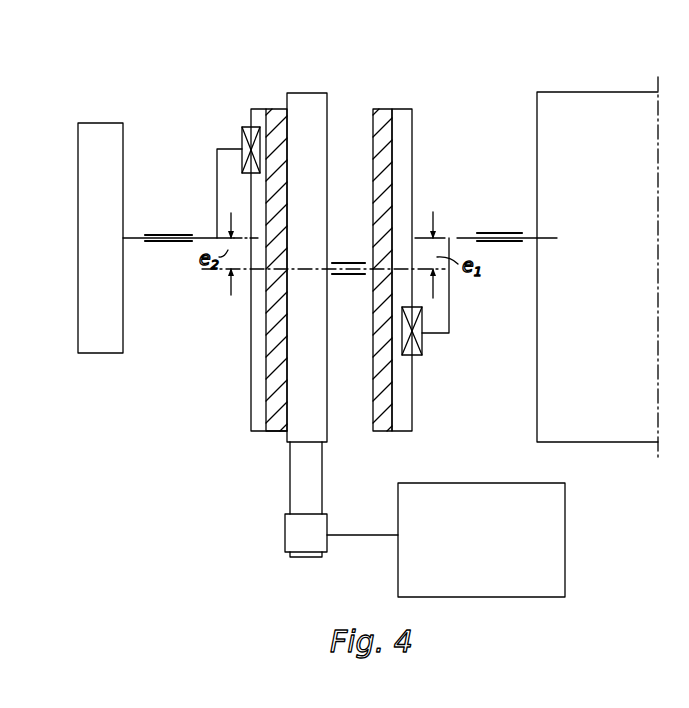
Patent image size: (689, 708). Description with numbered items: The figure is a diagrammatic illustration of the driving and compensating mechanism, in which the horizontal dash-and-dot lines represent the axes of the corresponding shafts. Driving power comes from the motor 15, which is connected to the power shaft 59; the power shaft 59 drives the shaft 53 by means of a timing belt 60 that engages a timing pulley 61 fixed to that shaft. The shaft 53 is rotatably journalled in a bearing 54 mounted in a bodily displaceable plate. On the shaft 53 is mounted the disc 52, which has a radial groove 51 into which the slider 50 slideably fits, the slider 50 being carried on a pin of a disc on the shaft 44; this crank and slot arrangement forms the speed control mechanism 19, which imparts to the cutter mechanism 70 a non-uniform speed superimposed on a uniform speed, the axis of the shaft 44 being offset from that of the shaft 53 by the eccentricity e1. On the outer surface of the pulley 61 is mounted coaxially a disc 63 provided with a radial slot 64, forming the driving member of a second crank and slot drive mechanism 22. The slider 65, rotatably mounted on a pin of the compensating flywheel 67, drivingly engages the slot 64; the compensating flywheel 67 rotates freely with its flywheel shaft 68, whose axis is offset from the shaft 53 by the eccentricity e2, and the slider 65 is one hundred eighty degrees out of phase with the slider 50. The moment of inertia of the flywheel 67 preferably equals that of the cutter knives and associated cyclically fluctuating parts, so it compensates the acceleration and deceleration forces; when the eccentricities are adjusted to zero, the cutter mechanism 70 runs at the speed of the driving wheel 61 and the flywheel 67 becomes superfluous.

The motor 15 is at (547, 548).
The speed control mechanism 19 is at (413, 92).
The second crank and slot drive mechanism 22 is at (227, 92).
The shaft 44 is at (462, 237).
The slider 50 is at (412, 352).
The radial groove 51 is at (398, 127).
The disc 52 is at (381, 115).
The shaft 53 is at (313, 268).
The bearing 54 is at (362, 276).
The power shaft 59 is at (300, 526).
The timing belt 60 is at (305, 476).
The timing pulley 61 is at (308, 110).
The disc 63 is at (275, 108).
The radial slot 64 is at (258, 109).
The slider 65 is at (245, 129).
The compensating flywheel 67 is at (98, 140).
The flywheel shaft 68 is at (137, 236).
The cutter mechanism 70 is at (548, 108).